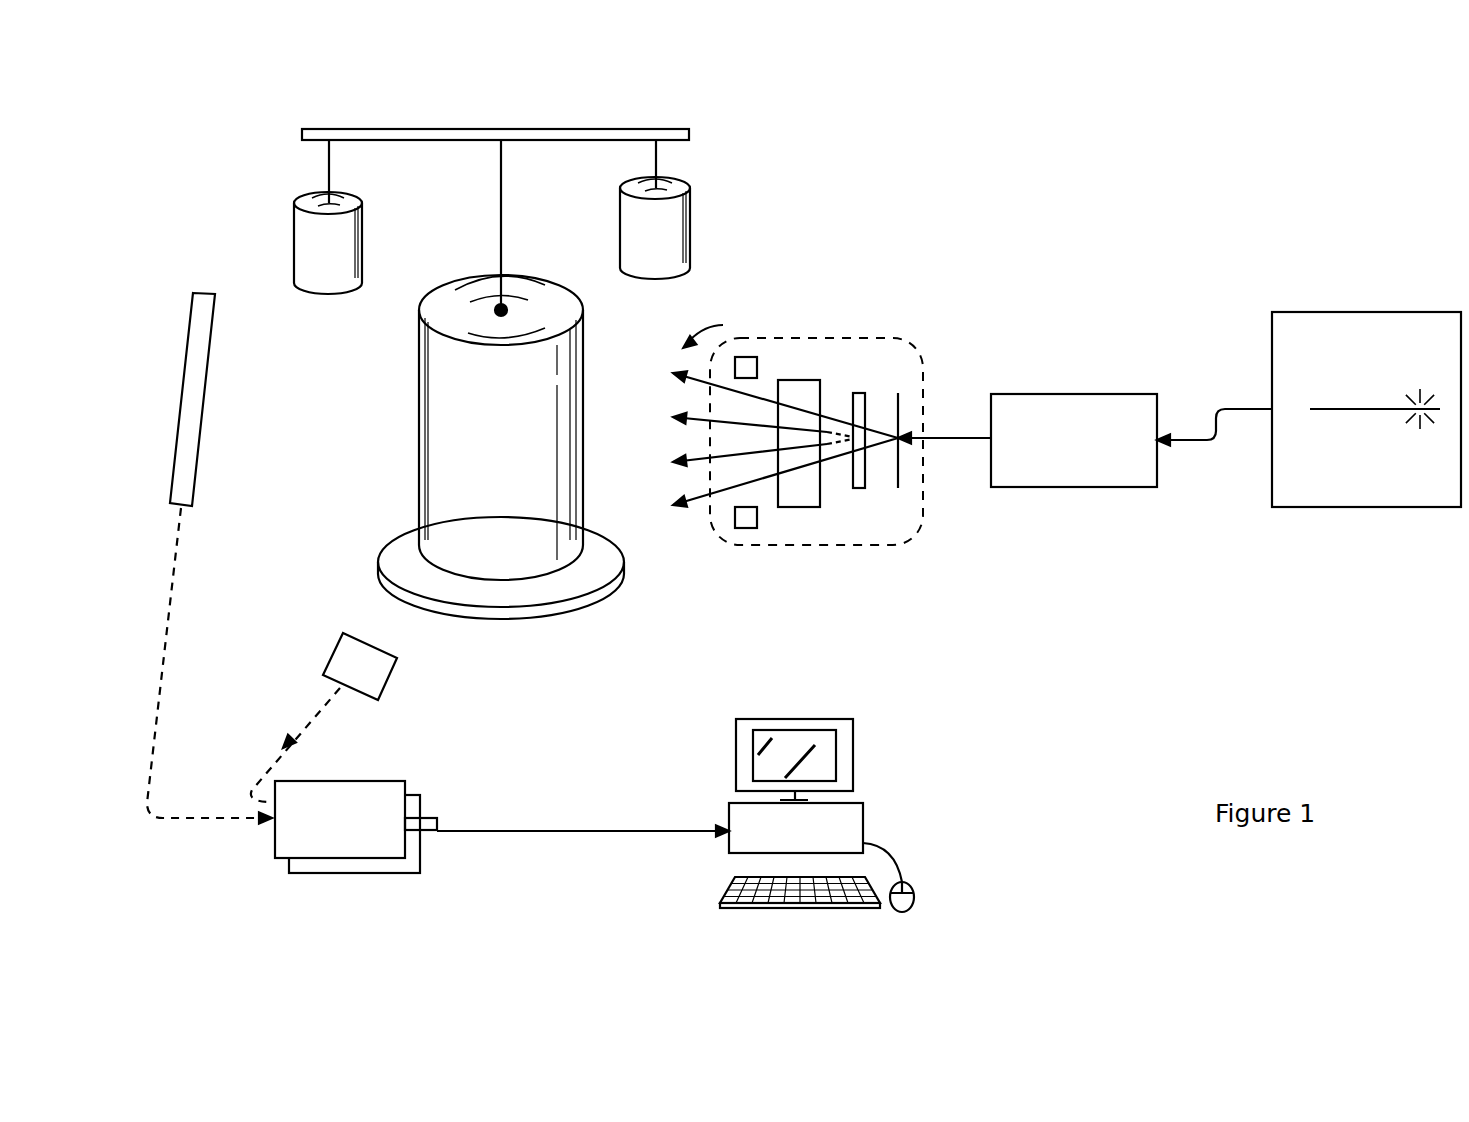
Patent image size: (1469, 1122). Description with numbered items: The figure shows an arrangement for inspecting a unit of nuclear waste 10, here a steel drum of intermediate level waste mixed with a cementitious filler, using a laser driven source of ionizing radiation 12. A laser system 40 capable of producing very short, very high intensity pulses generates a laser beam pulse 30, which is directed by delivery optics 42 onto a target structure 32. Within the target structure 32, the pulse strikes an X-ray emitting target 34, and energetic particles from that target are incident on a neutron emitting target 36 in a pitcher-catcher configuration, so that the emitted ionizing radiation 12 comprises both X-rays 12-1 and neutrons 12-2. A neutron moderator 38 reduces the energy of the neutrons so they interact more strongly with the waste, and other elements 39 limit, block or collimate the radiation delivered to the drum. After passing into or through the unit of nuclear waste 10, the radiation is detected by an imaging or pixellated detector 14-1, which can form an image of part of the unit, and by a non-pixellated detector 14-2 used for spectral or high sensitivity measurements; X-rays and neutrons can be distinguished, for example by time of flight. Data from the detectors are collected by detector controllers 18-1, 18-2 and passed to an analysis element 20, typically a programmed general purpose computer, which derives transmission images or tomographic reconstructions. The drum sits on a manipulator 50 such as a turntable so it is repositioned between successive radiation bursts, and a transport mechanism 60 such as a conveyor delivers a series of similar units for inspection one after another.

The unit of nuclear waste 10 is at (362, 222).
The ionizing radiation 12 is at (723, 326).
The X-rays 12-1 is at (692, 500).
The neutrons 12-2 is at (765, 453).
The imaging or pixellated detector 14-1 is at (182, 398).
The non-pixellated detector 14-2 is at (390, 677).
The detector controller 18-1 is at (382, 781).
The detector controller 18-2 is at (367, 873).
The analysis element 20 is at (863, 818).
The laser beam pulse 30 is at (947, 438).
The target structure 32 is at (918, 523).
The X-ray emitting target 34 is at (902, 402).
The neutron emitting target 36 is at (858, 393).
The neutron moderator 38 is at (800, 380).
The other elements 39 is at (758, 357).
The laser system 40 is at (1340, 312).
The delivery optics 42 is at (1070, 394).
The manipulator 50 is at (597, 590).
The transport mechanism 60 is at (585, 129).